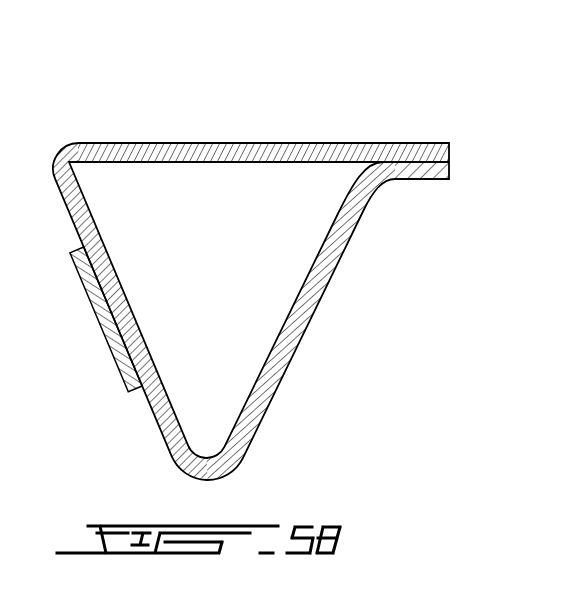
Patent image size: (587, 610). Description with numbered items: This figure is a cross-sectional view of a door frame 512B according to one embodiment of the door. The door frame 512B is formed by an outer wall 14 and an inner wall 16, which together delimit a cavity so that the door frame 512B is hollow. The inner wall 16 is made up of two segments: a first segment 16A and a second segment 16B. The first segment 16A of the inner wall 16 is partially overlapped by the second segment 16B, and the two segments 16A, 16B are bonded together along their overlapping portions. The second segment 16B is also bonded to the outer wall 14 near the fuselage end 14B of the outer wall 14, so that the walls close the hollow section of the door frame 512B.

The door frame 512B is at (72, 137).
The outer wall 14 is at (218, 141).
The fuselage end 14B is at (392, 130).
The inner wall 16 is at (84, 349).
The first segment 16A is at (90, 226).
The second segment 16B is at (280, 357).